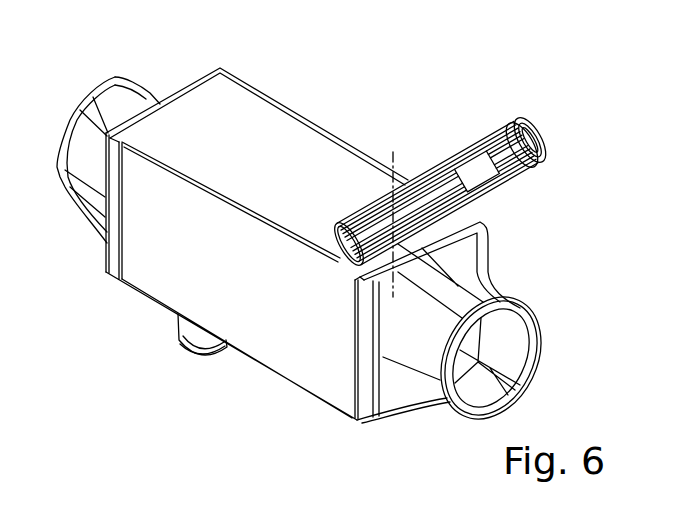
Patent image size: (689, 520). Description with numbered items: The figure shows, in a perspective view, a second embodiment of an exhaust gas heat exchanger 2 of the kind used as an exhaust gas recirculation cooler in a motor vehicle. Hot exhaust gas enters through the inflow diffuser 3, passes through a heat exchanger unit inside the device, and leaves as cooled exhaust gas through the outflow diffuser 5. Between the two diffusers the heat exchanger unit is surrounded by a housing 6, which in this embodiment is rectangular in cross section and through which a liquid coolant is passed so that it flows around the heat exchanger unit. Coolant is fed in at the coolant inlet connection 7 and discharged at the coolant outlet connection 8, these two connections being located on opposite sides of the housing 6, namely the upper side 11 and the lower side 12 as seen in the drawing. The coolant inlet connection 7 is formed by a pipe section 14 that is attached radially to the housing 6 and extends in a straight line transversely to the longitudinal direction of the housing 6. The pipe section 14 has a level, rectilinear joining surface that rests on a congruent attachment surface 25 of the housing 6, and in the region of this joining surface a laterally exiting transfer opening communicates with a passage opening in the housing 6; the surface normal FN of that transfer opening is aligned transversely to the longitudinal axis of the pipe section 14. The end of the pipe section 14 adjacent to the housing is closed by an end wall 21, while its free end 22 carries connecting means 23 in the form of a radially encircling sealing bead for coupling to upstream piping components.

The exhaust gas heat exchanger 2 is at (349, 89).
The inflow diffuser 3 is at (490, 278).
The outflow diffuser 5 is at (150, 97).
The housing 6 is at (264, 127).
The coolant inlet connection 7 is at (433, 157).
The coolant outlet connection 8 is at (181, 322).
The upper side 11 is at (340, 155).
The lower side 12 is at (278, 400).
The pipe section 14 is at (478, 140).
The end wall 21 is at (343, 253).
The free end 22 is at (512, 121).
The connecting means 23 is at (528, 164).
The attachment surface 25 is at (359, 278).
The surface normal FN is at (394, 158).